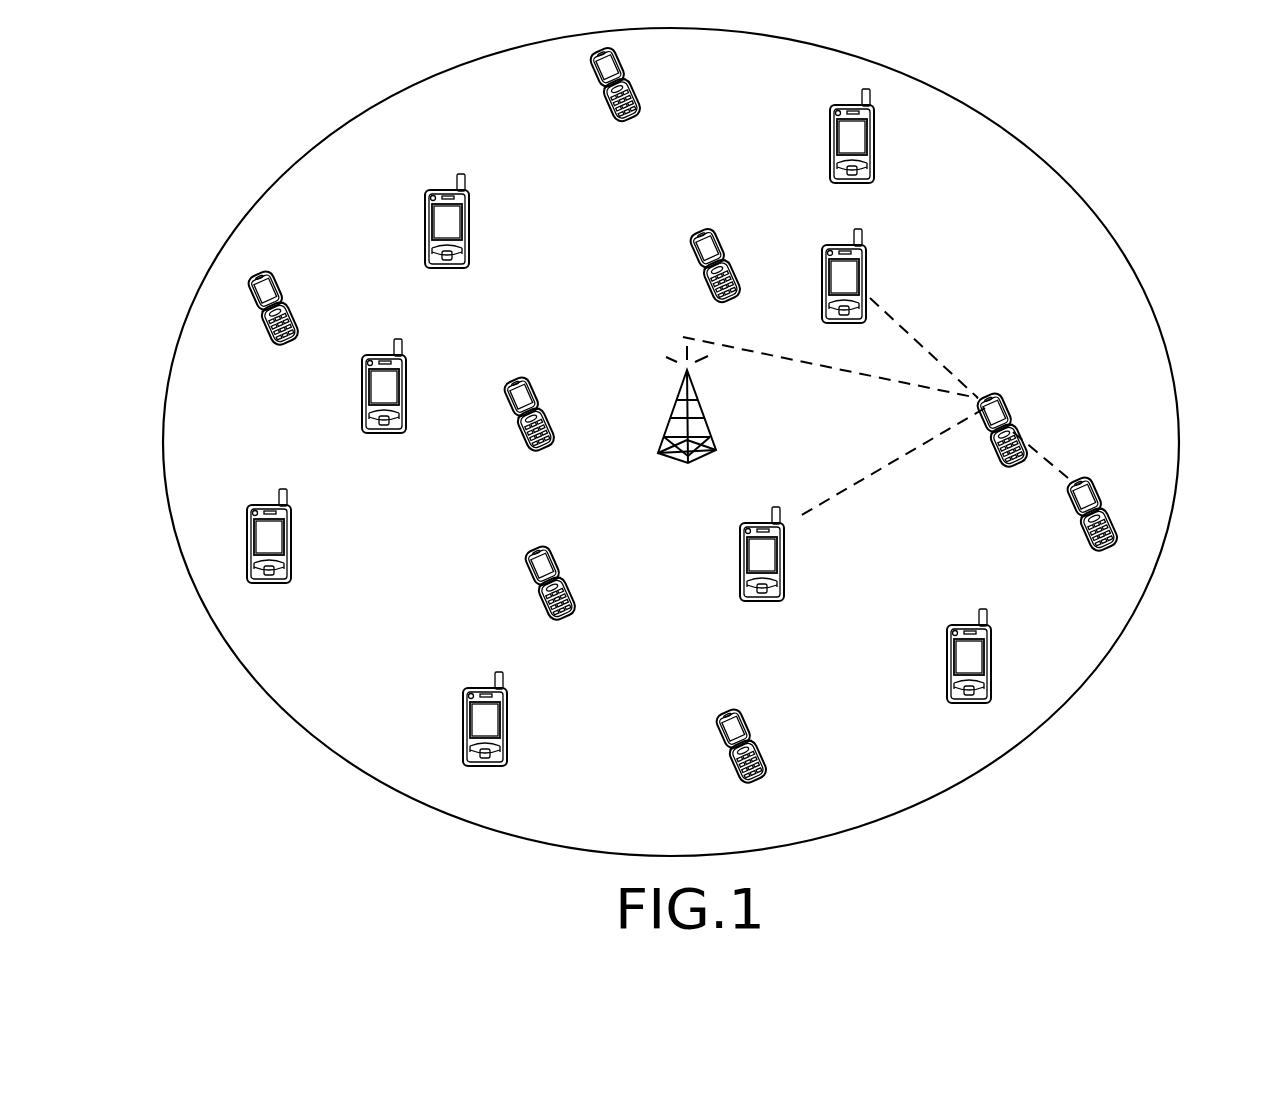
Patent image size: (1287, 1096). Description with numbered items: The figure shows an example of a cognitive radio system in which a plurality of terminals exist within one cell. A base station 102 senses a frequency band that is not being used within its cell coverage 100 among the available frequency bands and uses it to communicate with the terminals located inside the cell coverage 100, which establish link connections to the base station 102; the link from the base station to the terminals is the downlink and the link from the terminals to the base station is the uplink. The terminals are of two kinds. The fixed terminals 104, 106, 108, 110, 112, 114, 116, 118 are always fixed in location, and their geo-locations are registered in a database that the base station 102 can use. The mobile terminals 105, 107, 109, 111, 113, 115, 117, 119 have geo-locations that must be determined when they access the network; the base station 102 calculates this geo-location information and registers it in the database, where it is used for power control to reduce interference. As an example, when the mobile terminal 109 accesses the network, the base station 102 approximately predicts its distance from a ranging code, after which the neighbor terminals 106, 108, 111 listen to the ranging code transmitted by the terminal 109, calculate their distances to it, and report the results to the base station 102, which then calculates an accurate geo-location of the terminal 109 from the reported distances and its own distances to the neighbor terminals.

The cell coverage 100 is at (1181, 433).
The base station 102 is at (697, 423).
The fixed terminal 104 is at (869, 153).
The mobile terminal 105 is at (630, 114).
The fixed terminal 106 is at (855, 294).
The mobile terminal 107 is at (723, 279).
The fixed terminal 108 is at (768, 574).
The mobile terminal 109 is at (1006, 459).
The fixed terminal 110 is at (973, 677).
The mobile terminal 111 is at (1098, 542).
The fixed terminal 112 is at (490, 738).
The mobile terminal 113 is at (746, 764).
The fixed terminal 114 is at (270, 556).
The mobile terminal 115 is at (555, 599).
The fixed terminal 116 is at (383, 404).
The mobile terminal 117 is at (534, 429).
The fixed terminal 118 is at (455, 240).
The mobile terminal 119 is at (275, 324).